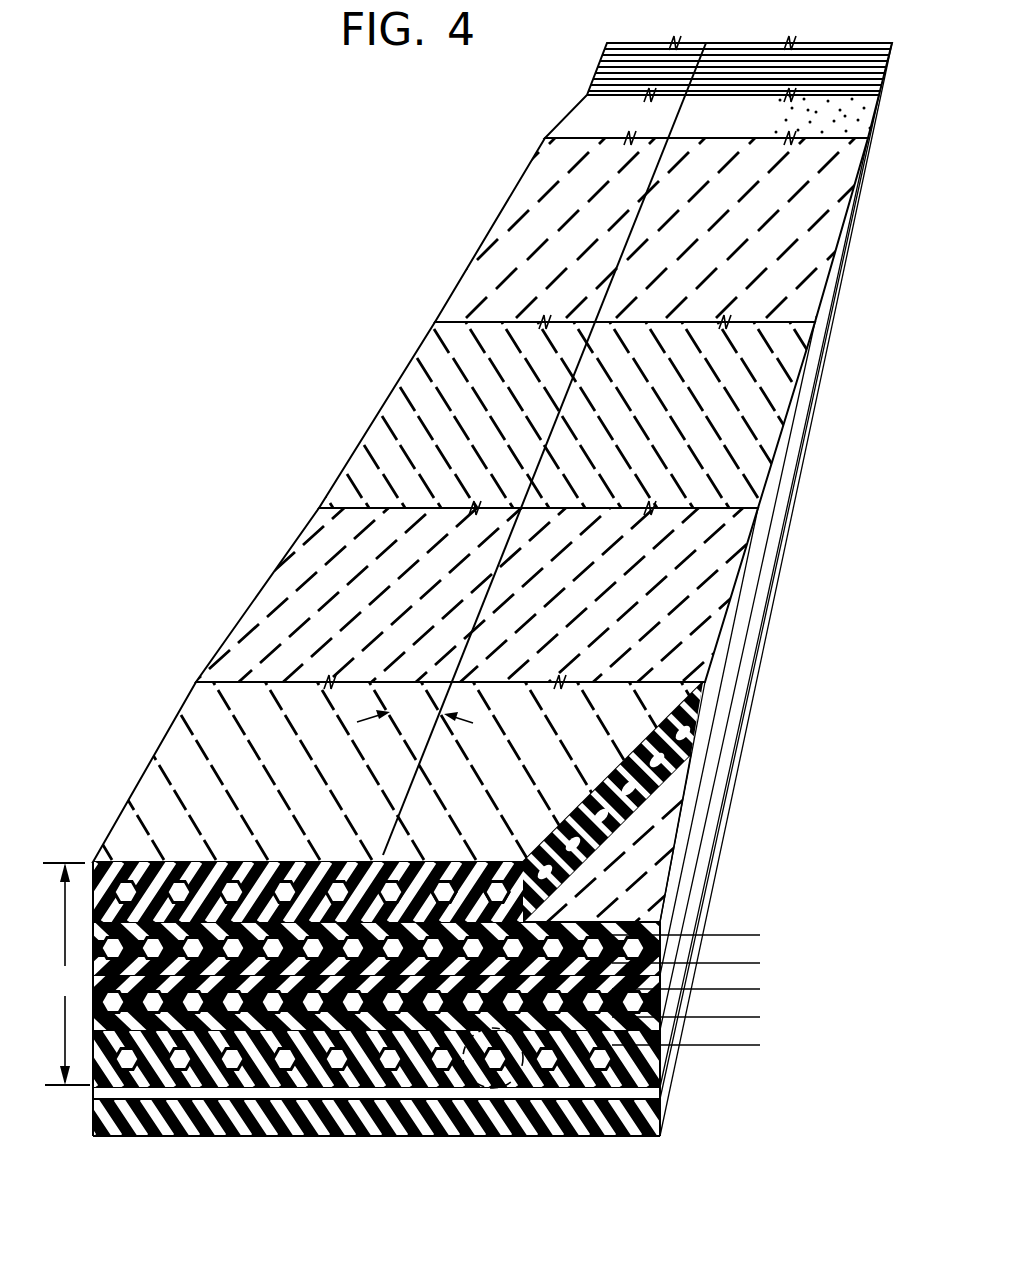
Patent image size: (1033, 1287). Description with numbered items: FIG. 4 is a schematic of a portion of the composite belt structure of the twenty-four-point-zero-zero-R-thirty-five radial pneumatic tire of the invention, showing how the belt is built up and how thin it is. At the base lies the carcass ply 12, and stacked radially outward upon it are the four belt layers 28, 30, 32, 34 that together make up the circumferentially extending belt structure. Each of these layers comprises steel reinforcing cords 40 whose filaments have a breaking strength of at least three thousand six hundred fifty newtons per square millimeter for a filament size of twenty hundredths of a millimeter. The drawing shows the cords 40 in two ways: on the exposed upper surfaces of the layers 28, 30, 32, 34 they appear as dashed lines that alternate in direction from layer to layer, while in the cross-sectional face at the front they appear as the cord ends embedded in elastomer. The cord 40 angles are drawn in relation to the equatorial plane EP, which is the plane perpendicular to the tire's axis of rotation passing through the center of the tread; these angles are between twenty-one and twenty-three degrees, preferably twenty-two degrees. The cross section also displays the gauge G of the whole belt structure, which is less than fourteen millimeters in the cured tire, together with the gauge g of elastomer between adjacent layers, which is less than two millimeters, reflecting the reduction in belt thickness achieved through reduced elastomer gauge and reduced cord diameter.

The ply 12 is at (590, 78).
The belt layer 28 is at (513, 228).
The belt layer 30 is at (410, 397).
The belt layer 32 is at (319, 571).
The belt layer 34 is at (189, 740).
The steel reinforcing cord 40 is at (492, 884).
The gauge between the layers g is at (686, 975).
The belt gauge G is at (66, 974).
The equatorial plane EP is at (531, 449).